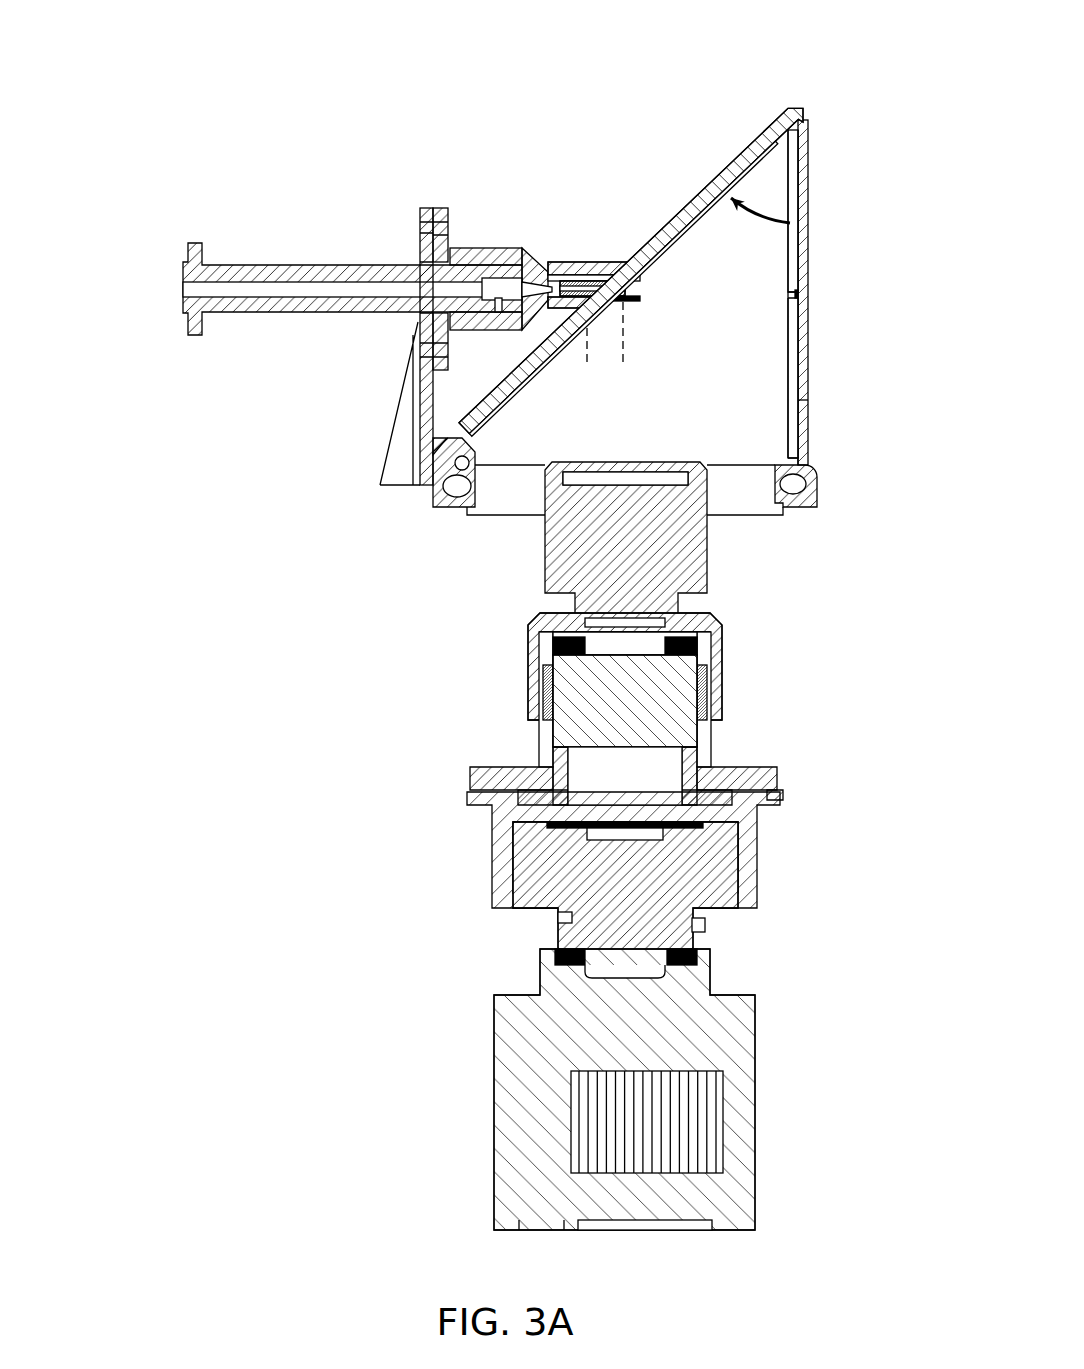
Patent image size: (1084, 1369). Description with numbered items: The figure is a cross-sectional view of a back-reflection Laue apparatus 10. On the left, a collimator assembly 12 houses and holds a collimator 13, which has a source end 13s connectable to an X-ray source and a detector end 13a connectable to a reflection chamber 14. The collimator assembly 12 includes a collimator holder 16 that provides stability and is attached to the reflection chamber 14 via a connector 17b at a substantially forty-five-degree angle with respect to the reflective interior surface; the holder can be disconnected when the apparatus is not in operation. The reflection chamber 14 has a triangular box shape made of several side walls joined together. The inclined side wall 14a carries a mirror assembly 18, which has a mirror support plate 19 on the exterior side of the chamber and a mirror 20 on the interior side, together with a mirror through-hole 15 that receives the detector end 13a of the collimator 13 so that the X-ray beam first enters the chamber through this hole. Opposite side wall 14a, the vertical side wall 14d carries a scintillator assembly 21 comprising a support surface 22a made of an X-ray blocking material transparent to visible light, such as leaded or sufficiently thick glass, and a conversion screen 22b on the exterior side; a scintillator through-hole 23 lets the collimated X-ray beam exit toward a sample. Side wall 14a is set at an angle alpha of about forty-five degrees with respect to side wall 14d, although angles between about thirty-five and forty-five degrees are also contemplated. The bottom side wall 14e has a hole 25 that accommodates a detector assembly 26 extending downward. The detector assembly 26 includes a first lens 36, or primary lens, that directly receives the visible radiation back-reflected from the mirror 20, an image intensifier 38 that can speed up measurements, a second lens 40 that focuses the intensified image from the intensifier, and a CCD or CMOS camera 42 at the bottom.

The back-reflection Laue apparatus 10 is at (652, 70).
The collimator assembly 12 is at (178, 180).
The collimator 13 is at (301, 290).
The source end 13s is at (183, 289).
The detector end 13a is at (600, 290).
The reflection chamber 14 is at (742, 95).
The side wall 14a is at (664, 252).
The side wall 14d is at (802, 402).
The side wall 14e is at (756, 470).
The mirror through-hole 15 is at (623, 365).
The collimator holder 16 is at (366, 453).
The connector 17b is at (434, 514).
The mirror assembly 18 is at (664, 252).
The mirror support plate 19 is at (755, 143).
The mirror 20 is at (774, 160).
The scintillator assembly 21 is at (847, 297).
The support surface 22a is at (800, 218).
The conversion screen 22b is at (808, 344).
The scintillator through-hole 23 is at (820, 295).
The hole 25 is at (545, 463).
The detector assembly 26 is at (456, 527).
The first lens 36 is at (694, 568).
The image intensifier 38 is at (672, 700).
The second lens 40 is at (700, 867).
The CCD or CMOS camera 42 is at (722, 1035).